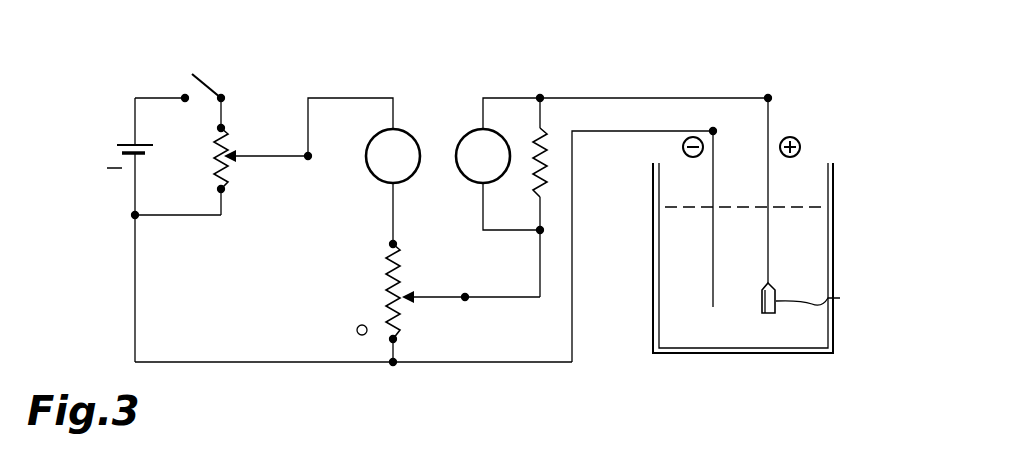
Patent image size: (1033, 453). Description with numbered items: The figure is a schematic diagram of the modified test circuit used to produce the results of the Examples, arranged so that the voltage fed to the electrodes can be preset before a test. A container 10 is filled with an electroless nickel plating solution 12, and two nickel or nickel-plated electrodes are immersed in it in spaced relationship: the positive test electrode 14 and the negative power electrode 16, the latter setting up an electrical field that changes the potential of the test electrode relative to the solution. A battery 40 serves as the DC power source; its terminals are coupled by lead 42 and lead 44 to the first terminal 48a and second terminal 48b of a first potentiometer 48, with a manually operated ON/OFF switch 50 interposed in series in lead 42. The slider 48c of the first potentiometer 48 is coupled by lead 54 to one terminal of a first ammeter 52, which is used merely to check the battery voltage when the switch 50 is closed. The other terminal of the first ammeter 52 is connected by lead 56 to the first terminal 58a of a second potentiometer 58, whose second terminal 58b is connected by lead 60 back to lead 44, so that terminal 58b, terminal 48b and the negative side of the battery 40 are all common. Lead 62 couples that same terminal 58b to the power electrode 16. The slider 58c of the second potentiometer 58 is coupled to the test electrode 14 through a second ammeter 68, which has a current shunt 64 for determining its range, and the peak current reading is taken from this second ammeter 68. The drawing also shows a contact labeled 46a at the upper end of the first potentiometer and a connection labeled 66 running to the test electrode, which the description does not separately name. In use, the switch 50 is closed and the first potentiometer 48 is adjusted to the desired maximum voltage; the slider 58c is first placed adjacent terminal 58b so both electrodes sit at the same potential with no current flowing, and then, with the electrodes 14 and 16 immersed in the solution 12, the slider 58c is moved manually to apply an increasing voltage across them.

The container 10 is at (835, 182).
The electroless nickel plating solution 12 is at (815, 252).
The test electrode 14 is at (770, 245).
The power electrode 16 is at (714, 262).
The battery 40 is at (112, 150).
The lead 42 is at (150, 98).
The lead 44 is at (178, 215).
The switch contact 46a is at (223, 127).
The first potentiometer 48 is at (207, 170).
The first terminal of the first potentiometer 48a is at (223, 96).
The second terminal of the first potentiometer 48b is at (224, 190).
The slider of the first potentiometer 48c is at (265, 156).
The ON/OFF switch 50 is at (203, 82).
The first ammeter 52 is at (398, 130).
The lead 54 is at (340, 98).
The lead 56 is at (394, 210).
The second potentiometer 58 is at (368, 300).
The first terminal of the second potentiometer 58a is at (397, 244).
The second terminal of the second potentiometer 58b is at (395, 366).
The slider of the second potentiometer 58c is at (437, 297).
The lead 60 is at (224, 362).
The lead 62 is at (488, 366).
The current shunt 64 is at (534, 147).
The conductor 66 is at (640, 98).
The second ammeter 68 is at (470, 133).